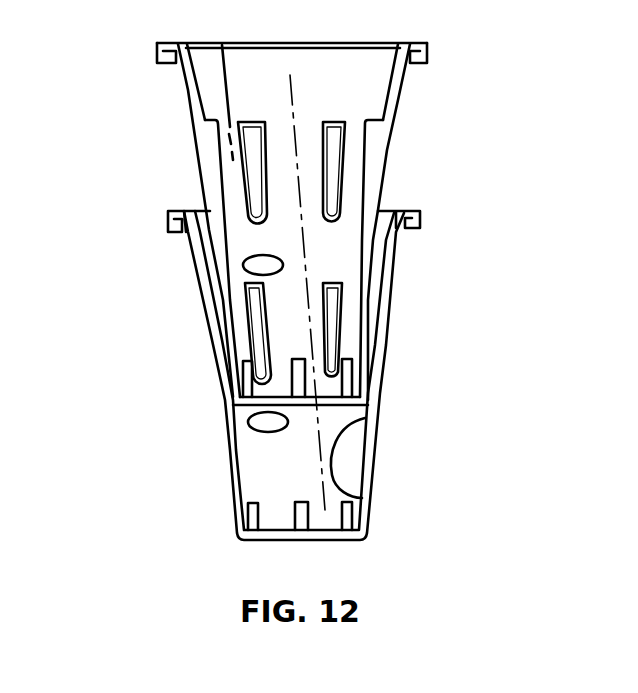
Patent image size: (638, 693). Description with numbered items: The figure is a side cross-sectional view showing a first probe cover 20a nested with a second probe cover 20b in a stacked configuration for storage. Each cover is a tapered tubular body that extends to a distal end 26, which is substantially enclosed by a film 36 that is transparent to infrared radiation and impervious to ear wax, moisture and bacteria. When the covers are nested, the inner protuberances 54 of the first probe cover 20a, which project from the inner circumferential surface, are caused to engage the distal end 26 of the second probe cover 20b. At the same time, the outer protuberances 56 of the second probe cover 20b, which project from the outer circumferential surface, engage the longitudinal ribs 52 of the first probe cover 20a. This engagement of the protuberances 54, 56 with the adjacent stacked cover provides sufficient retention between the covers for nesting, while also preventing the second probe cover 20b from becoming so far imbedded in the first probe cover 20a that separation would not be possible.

The first probe cover 20a is at (237, 490).
The second probe cover 20b is at (186, 86).
The distal end 26 is at (365, 378).
The film 36 is at (258, 430).
The longitudinal ribs 52 is at (216, 278).
The inner protuberances 54 is at (270, 427).
The outer protuberances 56 is at (215, 278).